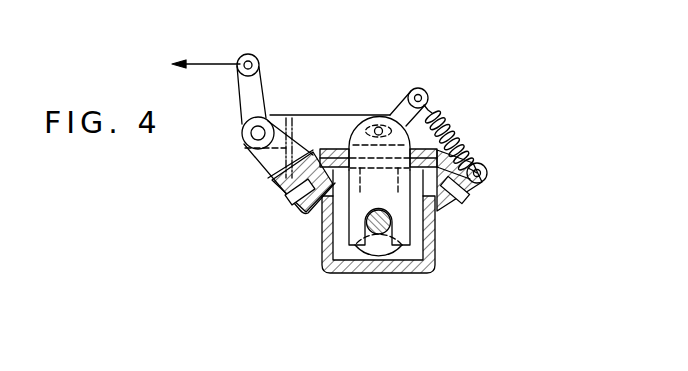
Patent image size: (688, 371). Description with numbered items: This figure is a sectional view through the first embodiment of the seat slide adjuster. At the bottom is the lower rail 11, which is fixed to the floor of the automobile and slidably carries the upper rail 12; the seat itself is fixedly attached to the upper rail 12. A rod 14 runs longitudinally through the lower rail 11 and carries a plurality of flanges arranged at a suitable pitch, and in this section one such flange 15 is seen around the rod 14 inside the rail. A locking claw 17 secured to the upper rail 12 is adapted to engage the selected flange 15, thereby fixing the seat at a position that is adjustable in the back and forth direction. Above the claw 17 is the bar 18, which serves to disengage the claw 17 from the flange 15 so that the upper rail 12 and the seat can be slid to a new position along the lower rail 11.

The lower rail 11 is at (434, 262).
The upper rail 12 is at (472, 200).
The rod 14 is at (381, 224).
The flange 15 is at (370, 250).
The locking claw 17 is at (318, 212).
The bar 18 is at (318, 122).